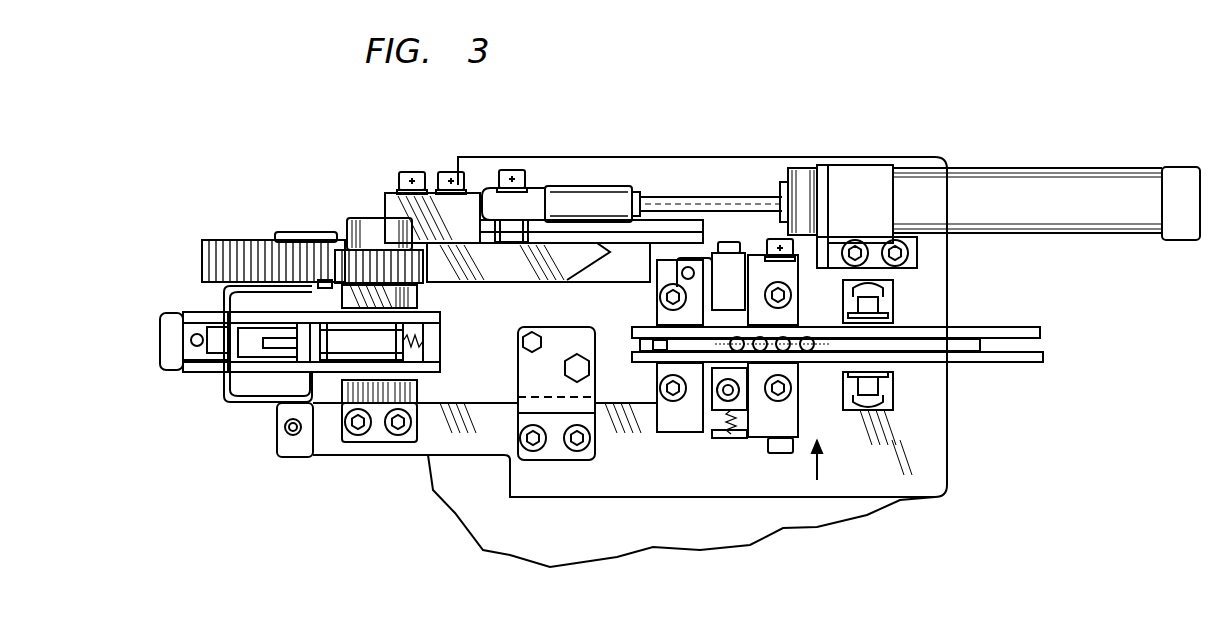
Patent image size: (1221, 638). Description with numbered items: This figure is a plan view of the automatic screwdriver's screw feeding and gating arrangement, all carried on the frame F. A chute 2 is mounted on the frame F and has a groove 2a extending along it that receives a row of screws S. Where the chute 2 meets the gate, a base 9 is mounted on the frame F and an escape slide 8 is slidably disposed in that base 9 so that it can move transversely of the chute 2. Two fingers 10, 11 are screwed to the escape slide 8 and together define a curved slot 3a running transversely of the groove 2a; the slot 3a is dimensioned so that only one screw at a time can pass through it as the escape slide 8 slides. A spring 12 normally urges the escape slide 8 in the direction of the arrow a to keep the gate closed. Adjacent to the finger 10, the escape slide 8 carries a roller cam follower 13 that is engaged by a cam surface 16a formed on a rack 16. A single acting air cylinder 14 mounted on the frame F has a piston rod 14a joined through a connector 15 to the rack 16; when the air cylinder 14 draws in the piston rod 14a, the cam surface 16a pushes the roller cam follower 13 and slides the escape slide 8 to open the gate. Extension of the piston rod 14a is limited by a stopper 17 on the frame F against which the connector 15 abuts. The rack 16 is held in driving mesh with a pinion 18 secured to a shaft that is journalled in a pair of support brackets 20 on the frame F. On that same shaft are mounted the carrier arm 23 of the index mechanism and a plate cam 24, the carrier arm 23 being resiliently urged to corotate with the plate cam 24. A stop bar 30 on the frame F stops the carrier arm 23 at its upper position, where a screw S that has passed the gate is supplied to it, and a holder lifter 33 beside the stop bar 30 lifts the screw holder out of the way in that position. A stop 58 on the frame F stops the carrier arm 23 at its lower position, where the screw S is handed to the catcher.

The chute 2 is at (992, 363).
The groove 2a is at (1003, 336).
The curved slot 3a is at (735, 322).
The escape slide 8 is at (757, 267).
The base 9 is at (672, 423).
The finger 10 is at (722, 277).
The finger 11 is at (720, 407).
The spring 12 is at (740, 427).
The roller cam follower 13 is at (687, 263).
The single acting air cylinder 14 is at (1082, 188).
The piston rod 14a is at (758, 200).
The connector 15 is at (580, 192).
The rack 16 is at (222, 243).
The cam surface 16a is at (610, 252).
The stopper 17 is at (435, 210).
The pinion 18 is at (370, 230).
The support bracket 20 is at (403, 300).
The carrier arm 23 is at (440, 368).
The plate cam 24 is at (343, 348).
The stop bar 30 is at (577, 362).
The holder lifter 33 is at (532, 340).
The stop 58 is at (228, 388).
The screw S is at (820, 350).
The arrow a is at (823, 460).
The frame F is at (938, 462).